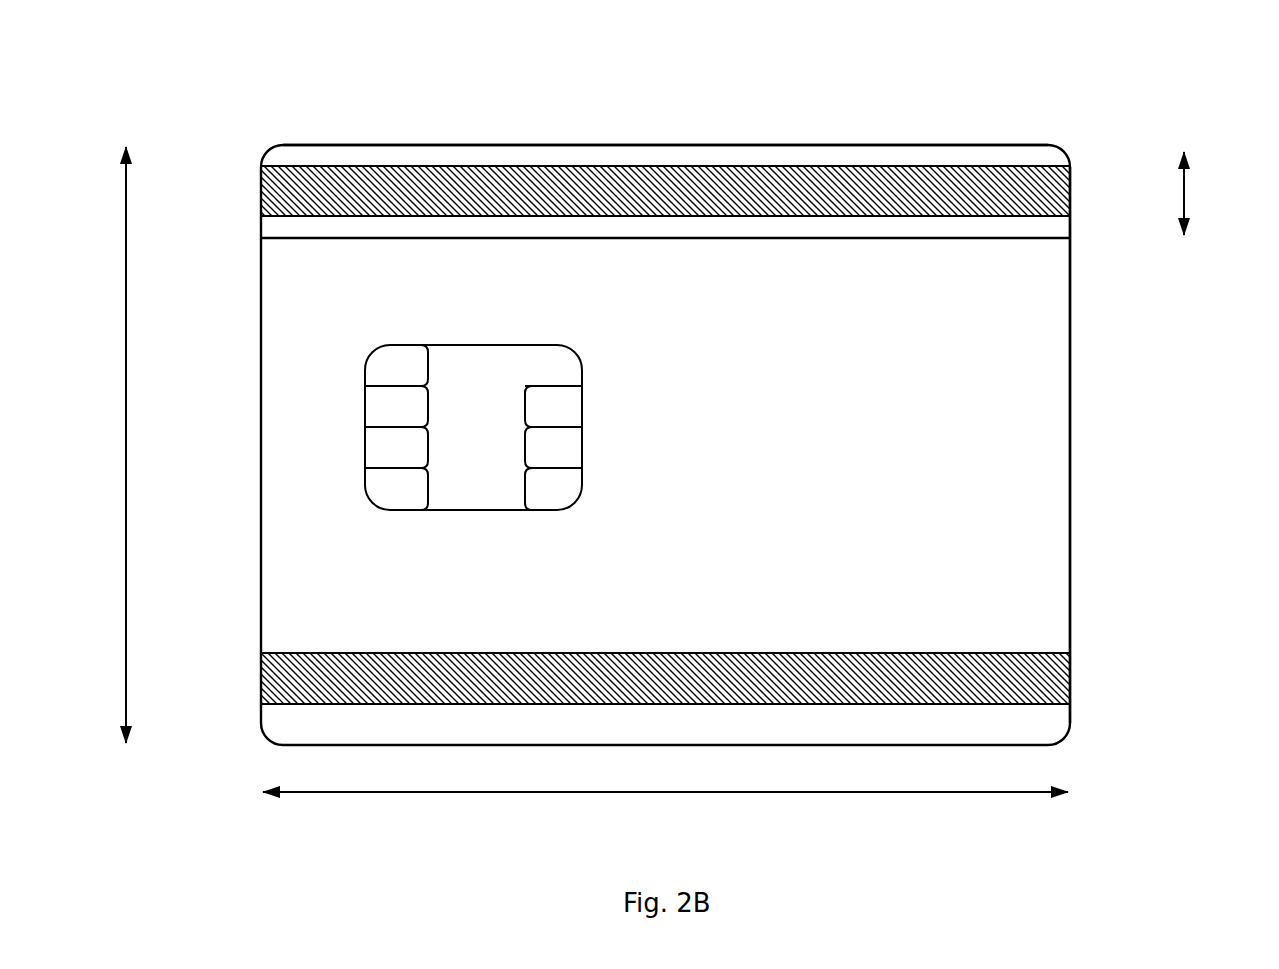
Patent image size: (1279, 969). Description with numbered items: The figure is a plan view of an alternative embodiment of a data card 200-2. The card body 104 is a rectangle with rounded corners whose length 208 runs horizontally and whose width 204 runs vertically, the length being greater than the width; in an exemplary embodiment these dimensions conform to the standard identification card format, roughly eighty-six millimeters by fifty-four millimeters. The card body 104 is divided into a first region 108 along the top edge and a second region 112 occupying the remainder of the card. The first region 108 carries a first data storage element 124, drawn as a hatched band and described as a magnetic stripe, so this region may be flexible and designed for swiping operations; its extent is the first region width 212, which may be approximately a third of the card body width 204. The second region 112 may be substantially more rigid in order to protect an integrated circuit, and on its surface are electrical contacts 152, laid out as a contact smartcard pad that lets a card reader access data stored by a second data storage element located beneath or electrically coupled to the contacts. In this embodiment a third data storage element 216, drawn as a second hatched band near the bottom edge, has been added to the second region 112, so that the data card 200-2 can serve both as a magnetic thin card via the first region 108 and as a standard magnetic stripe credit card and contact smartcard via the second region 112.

The data card 200-2 is at (446, 88).
The first region 108 is at (745, 144).
The first data storage element 124 is at (1007, 185).
The first region width 212 is at (1184, 197).
The card body 104 is at (1074, 240).
The second region 112 is at (1075, 540).
The third data storage element 216 is at (1040, 685).
The electrical contacts 152 is at (402, 482).
The width 204 is at (125, 460).
The length 208 is at (658, 793).